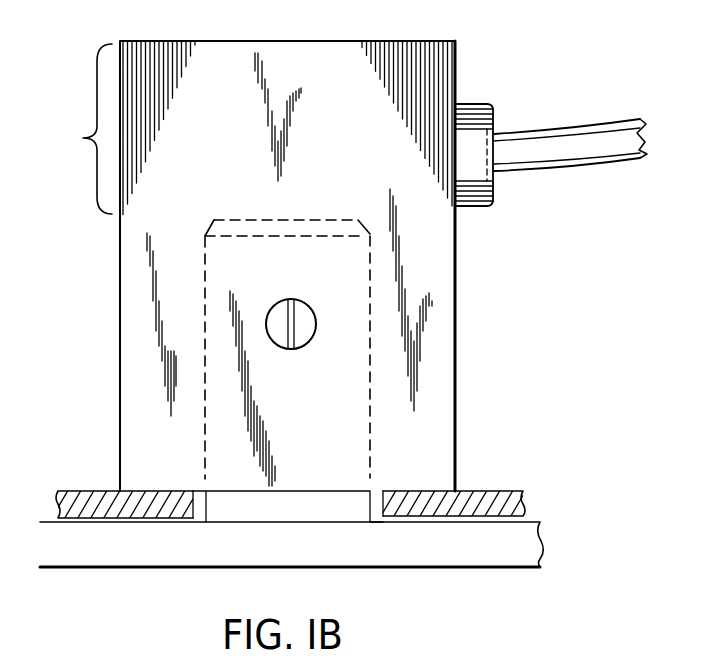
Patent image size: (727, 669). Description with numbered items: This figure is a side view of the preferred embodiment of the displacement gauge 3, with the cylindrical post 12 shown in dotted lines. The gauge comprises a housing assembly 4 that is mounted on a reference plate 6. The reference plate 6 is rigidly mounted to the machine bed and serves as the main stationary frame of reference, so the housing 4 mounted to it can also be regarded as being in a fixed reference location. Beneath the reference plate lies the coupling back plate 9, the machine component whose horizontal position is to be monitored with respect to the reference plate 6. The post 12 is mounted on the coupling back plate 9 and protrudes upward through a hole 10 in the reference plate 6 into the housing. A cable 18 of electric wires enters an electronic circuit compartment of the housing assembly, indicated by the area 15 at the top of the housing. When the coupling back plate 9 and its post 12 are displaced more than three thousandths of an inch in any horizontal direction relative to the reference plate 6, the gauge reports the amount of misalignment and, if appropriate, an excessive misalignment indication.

The displacement gauge 3 is at (466, 291).
The housing assembly 4 is at (456, 341).
The reference plate 6 is at (484, 489).
The coupling back plate 9 is at (544, 530).
The hole 10 is at (377, 488).
The post 12 is at (225, 216).
The area 15 is at (123, 128).
The cable 18 is at (573, 130).